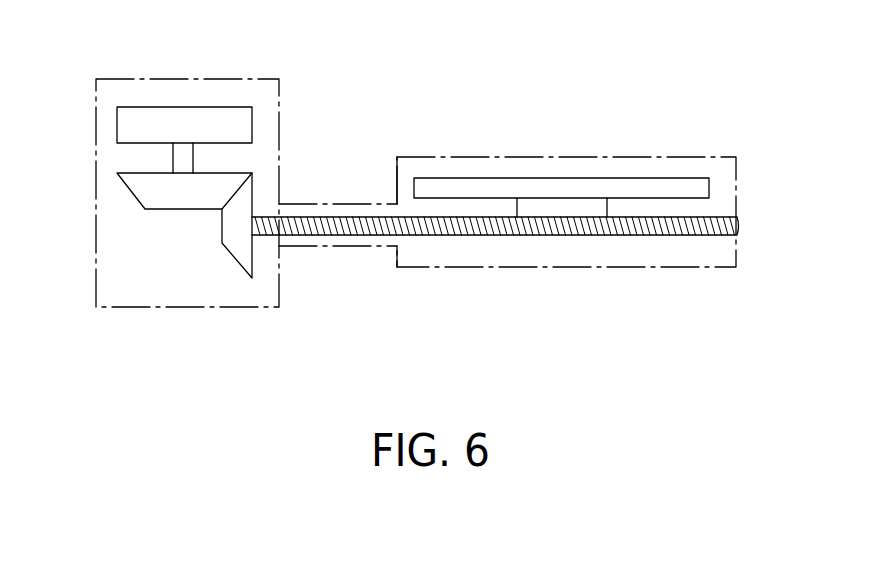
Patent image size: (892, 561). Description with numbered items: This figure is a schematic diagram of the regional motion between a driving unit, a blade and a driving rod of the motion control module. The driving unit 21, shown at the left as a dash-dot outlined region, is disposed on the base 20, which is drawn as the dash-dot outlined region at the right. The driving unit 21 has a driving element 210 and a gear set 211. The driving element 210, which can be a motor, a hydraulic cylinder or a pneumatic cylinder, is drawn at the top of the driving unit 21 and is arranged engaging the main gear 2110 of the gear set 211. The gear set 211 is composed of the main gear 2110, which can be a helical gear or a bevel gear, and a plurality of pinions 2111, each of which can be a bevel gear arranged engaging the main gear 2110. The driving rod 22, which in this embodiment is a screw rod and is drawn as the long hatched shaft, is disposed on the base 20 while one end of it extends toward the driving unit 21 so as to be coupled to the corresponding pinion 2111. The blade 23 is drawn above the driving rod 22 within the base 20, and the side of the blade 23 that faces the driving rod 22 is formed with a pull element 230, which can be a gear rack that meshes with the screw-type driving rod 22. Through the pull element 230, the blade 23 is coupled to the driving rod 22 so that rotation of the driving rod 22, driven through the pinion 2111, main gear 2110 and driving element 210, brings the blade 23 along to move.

The base 20 is at (678, 168).
The driving unit 21 is at (128, 78).
The driving element 210 is at (203, 117).
The main gear 2110 is at (155, 196).
The gear set 211 is at (143, 243).
The pinion 2111 is at (243, 247).
The driving rod 22 is at (698, 226).
The blade 23 is at (695, 189).
The pull element 230 is at (557, 208).